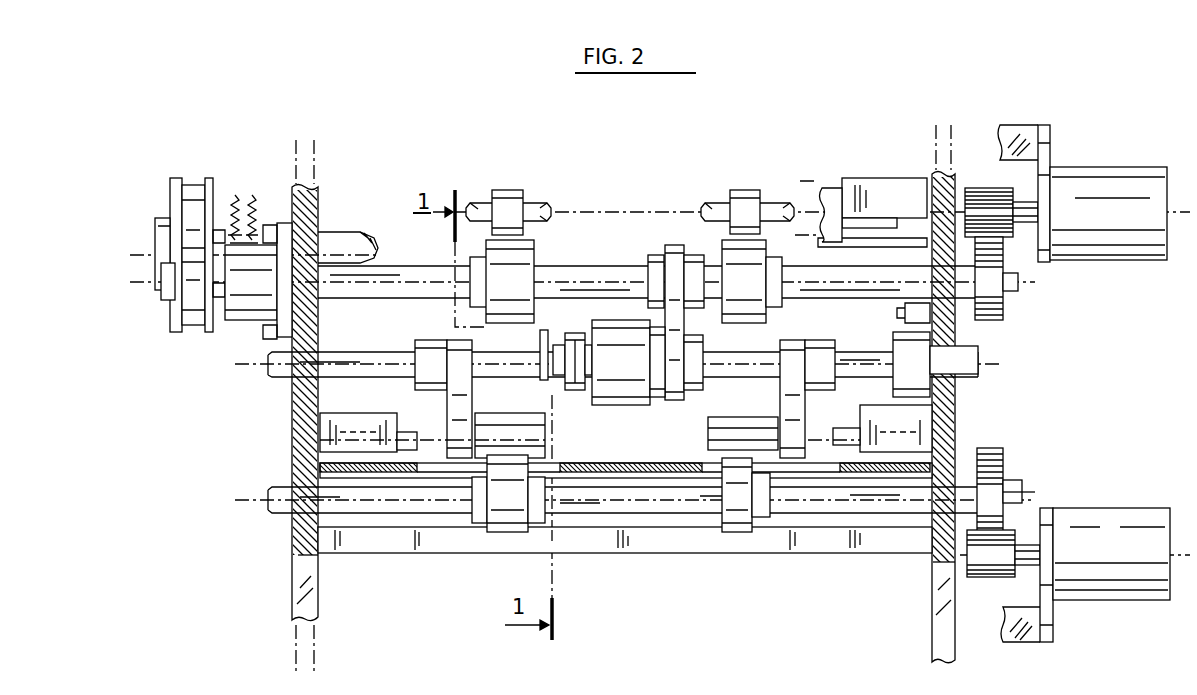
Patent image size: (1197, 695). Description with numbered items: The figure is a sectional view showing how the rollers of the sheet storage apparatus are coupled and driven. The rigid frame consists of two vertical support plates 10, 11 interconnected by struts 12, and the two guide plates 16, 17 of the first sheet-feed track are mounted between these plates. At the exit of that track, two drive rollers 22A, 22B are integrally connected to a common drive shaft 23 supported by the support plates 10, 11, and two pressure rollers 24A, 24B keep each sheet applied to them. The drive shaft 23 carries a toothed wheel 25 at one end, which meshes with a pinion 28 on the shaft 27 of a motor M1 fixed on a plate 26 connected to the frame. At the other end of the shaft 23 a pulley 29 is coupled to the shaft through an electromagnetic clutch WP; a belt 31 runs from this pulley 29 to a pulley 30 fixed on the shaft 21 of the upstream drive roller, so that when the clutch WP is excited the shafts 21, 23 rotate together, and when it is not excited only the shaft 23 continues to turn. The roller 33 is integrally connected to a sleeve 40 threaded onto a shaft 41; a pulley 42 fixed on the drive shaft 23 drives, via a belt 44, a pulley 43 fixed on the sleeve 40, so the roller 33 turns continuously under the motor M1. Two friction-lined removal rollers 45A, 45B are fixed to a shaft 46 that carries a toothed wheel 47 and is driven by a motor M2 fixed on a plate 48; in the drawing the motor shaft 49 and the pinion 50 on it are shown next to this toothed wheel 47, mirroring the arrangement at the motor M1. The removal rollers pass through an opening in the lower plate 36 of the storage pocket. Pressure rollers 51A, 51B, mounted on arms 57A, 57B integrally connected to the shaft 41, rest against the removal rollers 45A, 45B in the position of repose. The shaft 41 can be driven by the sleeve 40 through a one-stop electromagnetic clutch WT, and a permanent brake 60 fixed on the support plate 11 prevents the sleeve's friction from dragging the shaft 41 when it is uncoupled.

The support plate 10 is at (292, 420).
The support plate 11 is at (955, 418).
The struts 12 is at (658, 538).
The guide plate 16 is at (882, 190).
The guide plate 17 is at (830, 190).
The shaft 21 is at (341, 235).
The drive roller 22A is at (522, 262).
The drive roller 22B is at (768, 310).
The drive shaft 23 is at (421, 279).
The pressure roller 24A is at (506, 200).
The pressure roller 24B is at (740, 200).
The toothed wheel 25 is at (1003, 310).
The plate 26 is at (1048, 138).
The shaft 27 is at (1027, 204).
The pinion 28 is at (978, 190).
The pulley 29 is at (170, 313).
The pulley 30 is at (168, 192).
The belt 31 is at (190, 198).
The roller 33 is at (619, 406).
The lower plate 36 is at (608, 470).
The sleeve 40 is at (653, 398).
The shaft 41 is at (373, 352).
The pulley 42 is at (657, 254).
The pulley 43 is at (692, 398).
The belt 44 is at (679, 252).
The removal roller 45A is at (493, 528).
The removal roller 45B is at (752, 518).
The shaft 46 is at (852, 513).
The toothed wheel 47 is at (993, 452).
The plate 48 is at (1047, 513).
The motor shaft 49 is at (1028, 567).
The motor pinion 50 is at (972, 577).
The pressure roller 51A is at (528, 425).
The pressure roller 51B is at (757, 428).
The arm 57A is at (448, 400).
The arm 57B is at (800, 420).
The permanent brake 60 is at (893, 335).
The motor M1 is at (1107, 240).
The motor M2 is at (1127, 580).
The electromagnetic clutch WP is at (240, 300).
The one-stop electromagnetic clutch WT is at (571, 397).